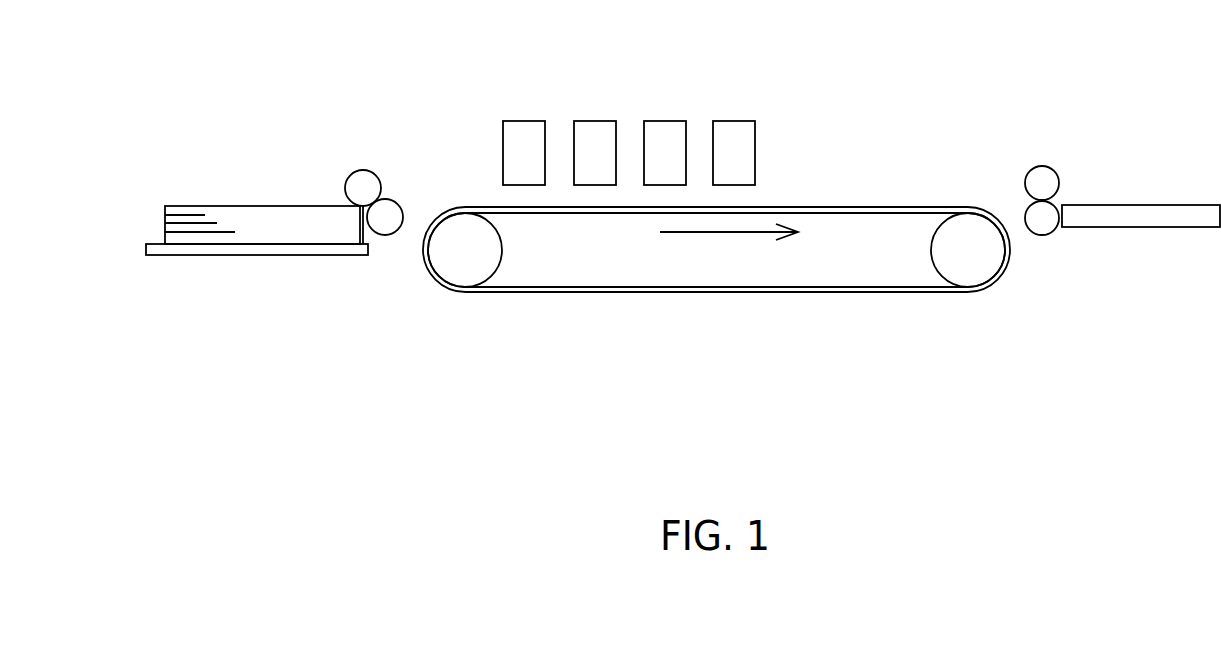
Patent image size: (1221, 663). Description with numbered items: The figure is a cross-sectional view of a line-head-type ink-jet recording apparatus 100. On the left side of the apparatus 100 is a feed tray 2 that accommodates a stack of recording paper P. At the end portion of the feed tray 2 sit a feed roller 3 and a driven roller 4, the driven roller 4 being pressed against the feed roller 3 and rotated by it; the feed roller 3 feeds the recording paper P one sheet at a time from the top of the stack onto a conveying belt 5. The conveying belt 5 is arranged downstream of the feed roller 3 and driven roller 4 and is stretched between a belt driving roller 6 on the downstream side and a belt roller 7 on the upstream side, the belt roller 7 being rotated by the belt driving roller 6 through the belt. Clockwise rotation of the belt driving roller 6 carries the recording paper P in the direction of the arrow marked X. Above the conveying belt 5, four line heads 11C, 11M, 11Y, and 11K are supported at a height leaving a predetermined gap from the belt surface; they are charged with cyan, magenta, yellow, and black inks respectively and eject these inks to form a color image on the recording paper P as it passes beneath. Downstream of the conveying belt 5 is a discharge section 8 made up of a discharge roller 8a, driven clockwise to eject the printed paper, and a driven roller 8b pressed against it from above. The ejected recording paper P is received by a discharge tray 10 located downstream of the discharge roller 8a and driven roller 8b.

The line-head-type ink-jet recording apparatus 100 is at (428, 125).
The recording paper P is at (260, 218).
The feed tray 2 is at (237, 250).
The feed roller 3 is at (363, 185).
The driven roller 4 is at (385, 222).
The conveying belt 5 is at (700, 293).
The belt driving roller 6 is at (968, 267).
The belt roller 7 is at (475, 268).
The discharge section 8 is at (1007, 193).
The discharge roller 8a is at (1043, 225).
The driven roller 8b is at (1042, 180).
The discharge tray 10 is at (1153, 217).
The line head 11C is at (530, 130).
The line head 11M is at (600, 130).
The line head 11Y is at (670, 130).
The line head 11K is at (739, 130).